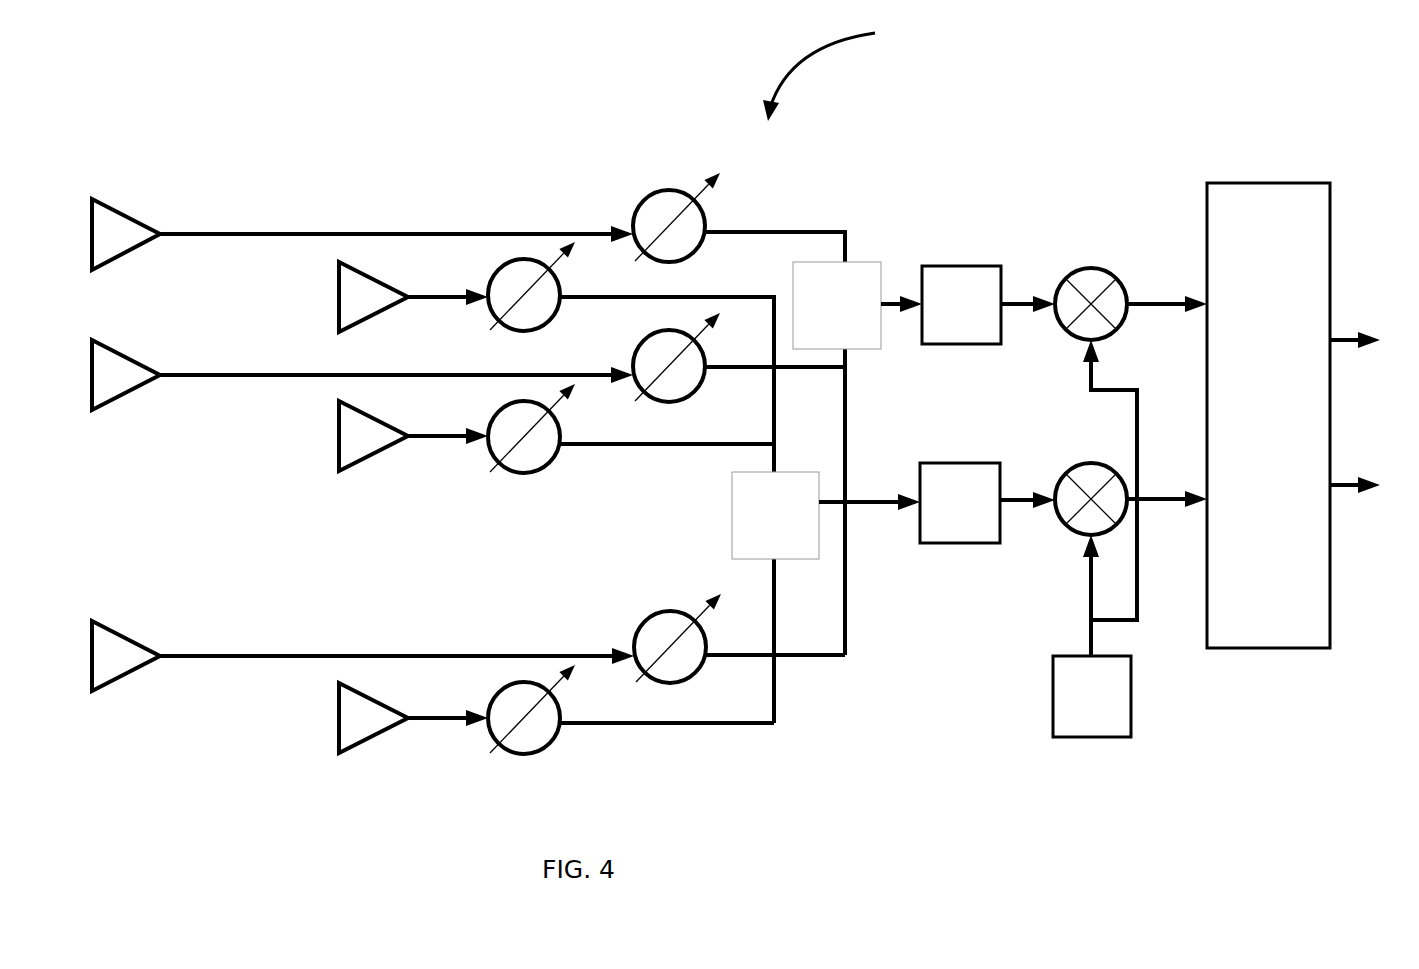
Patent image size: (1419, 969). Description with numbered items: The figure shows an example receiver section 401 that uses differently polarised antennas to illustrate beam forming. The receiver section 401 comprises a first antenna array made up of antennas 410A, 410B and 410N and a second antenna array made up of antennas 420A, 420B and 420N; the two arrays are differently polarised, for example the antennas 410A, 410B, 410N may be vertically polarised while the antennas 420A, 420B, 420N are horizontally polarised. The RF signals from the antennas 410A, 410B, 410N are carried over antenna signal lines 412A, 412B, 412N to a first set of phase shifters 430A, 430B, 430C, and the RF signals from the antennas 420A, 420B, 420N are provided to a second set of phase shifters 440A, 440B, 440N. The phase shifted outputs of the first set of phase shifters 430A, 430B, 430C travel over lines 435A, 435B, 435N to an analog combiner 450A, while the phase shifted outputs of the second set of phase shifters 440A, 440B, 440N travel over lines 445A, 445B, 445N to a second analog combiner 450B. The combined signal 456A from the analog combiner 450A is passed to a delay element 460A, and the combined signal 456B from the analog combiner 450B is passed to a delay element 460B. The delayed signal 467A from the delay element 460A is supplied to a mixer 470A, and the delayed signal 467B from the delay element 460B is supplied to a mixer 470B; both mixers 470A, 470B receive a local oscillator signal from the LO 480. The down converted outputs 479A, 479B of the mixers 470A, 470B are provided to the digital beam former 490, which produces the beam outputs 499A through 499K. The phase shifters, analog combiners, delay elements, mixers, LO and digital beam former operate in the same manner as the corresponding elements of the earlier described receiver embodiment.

The receiver section 401 is at (843, 71).
The antenna 410A is at (90, 236).
The antenna 410B is at (90, 377).
The antenna 410N is at (90, 657).
The antenna signal line 412A is at (180, 232).
The antenna signal line 412B is at (190, 372).
The antenna signal line 412N is at (190, 653).
The antenna 420A is at (337, 280).
The antenna 420B is at (337, 430).
The antenna 420N is at (337, 703).
The phase shifter 430A is at (685, 262).
The phase shifter 430B is at (672, 402).
The phase shifter 430C is at (670, 683).
The phase shifted signal line 435A is at (791, 228).
The phase shifted signal line 435B is at (810, 375).
The phase shifted signal line 435N is at (827, 660).
The phase shifter 440A is at (525, 332).
The phase shifter 440B is at (527, 473).
The phase shifter 440N is at (527, 755).
The phase shifted signal line 445A is at (740, 302).
The phase shifted signal line 445B is at (668, 448).
The phase shifted signal line 445N is at (710, 727).
The analog combiner 450A is at (837, 305).
The analog combiner 450B is at (775, 515).
The combined signal 456A is at (895, 297).
The combined signal 456B is at (878, 498).
The delay element 460A is at (961, 305).
The delay element 460B is at (960, 503).
The filtered signal 467A is at (1022, 310).
The filtered signal 467B is at (1025, 505).
The mixer 470A is at (1088, 266).
The mixer 470B is at (1060, 476).
The downconverted signal 479A is at (1147, 310).
The downconverted signal 479B is at (1175, 505).
The LO 480 is at (1095, 538).
The digital beam former 490 is at (1268, 415).
The beam output 499A is at (1355, 332).
The beam output 499K is at (1355, 478).